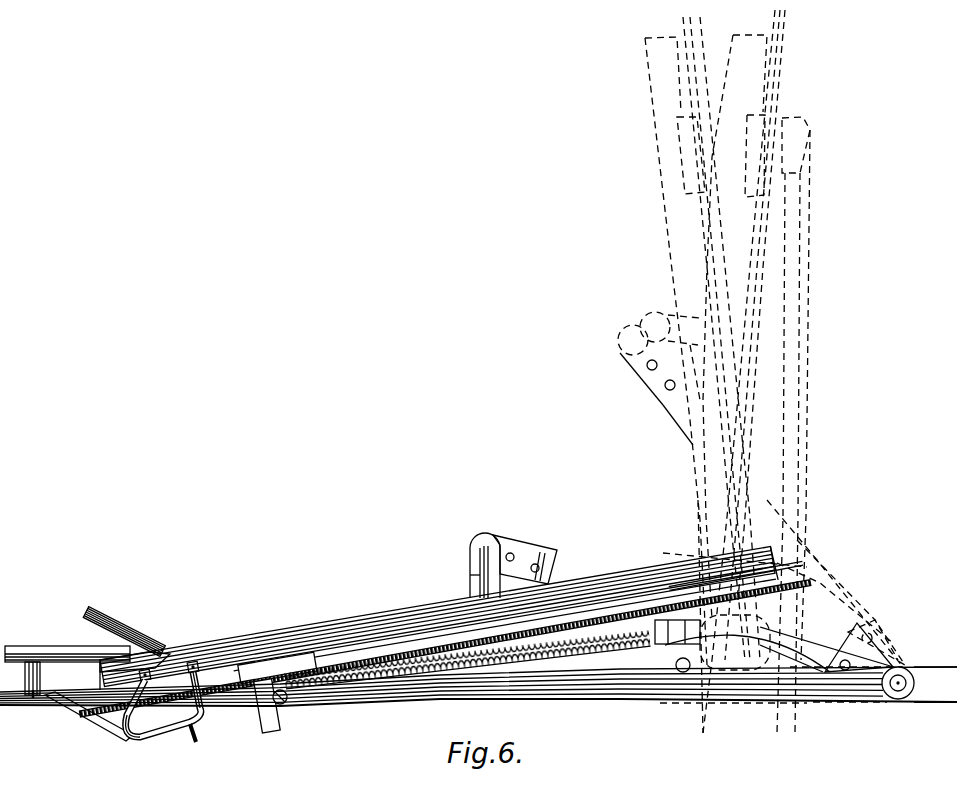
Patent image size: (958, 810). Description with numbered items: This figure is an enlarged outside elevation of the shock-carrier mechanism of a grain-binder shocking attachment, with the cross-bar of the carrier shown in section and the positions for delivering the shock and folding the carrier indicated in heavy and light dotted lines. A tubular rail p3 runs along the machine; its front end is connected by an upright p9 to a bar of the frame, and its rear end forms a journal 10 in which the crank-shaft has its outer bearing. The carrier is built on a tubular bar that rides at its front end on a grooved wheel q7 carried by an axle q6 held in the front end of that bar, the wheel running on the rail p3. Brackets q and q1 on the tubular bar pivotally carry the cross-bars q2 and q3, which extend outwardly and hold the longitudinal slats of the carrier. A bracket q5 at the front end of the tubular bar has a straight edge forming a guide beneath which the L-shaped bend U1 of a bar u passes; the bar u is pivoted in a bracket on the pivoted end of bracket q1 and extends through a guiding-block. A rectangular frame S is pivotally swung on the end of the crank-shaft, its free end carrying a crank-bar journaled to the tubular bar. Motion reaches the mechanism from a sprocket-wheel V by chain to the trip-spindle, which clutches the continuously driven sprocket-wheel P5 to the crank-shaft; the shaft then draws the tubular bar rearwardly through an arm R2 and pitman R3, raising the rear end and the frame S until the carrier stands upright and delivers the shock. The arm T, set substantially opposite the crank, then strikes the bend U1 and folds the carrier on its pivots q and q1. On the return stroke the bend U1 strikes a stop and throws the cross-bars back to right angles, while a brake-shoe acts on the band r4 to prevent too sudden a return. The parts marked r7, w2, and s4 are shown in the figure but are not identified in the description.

The tubular rail p3 is at (63, 690).
The upright p9 is at (35, 696).
The pitman R3 is at (118, 627).
The arm R2 is at (65, 708).
The grooved wheel q7 is at (147, 652).
The bracket q is at (355, 627).
The bracket q1 is at (263, 665).
The bracket q5 is at (270, 727).
The cross-bar q2 is at (297, 702).
The axle q6 is at (166, 734).
The band r4 is at (136, 741).
The L-shaped bend U1 is at (200, 728).
The hook end r7 is at (194, 742).
The spring w2 is at (457, 672).
The bar u is at (530, 672).
The cross-bar q3 is at (655, 640).
The sprocket-wheel V is at (687, 645).
The rectangular frame S is at (553, 583).
The pin s4 is at (470, 576).
The sprocket-wheel P5 is at (899, 682).
The journal 10 is at (920, 673).
The arm T is at (925, 692).